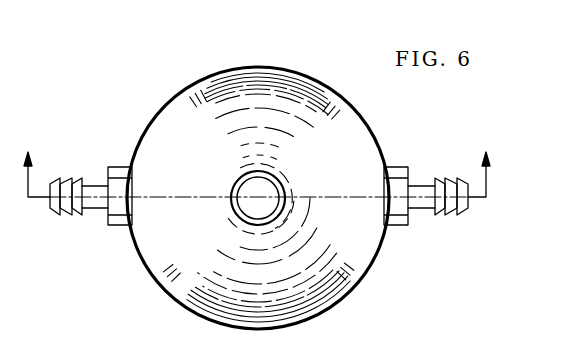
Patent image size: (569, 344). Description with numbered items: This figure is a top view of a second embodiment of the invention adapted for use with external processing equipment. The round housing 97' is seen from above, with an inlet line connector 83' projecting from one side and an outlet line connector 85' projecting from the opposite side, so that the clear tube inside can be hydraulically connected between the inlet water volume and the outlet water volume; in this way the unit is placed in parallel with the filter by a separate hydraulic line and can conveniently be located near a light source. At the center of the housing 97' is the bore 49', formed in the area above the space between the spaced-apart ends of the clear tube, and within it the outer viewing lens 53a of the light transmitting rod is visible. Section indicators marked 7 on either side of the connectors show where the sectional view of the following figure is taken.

The housing 97' is at (266, 198).
The annular ring 49' is at (231, 204).
The central bore 53a is at (254, 184).
The left barbed fitting 85' is at (72, 205).
The right barbed fitting 83' is at (455, 198).
The section line for FIG. 7 is at (257, 164).